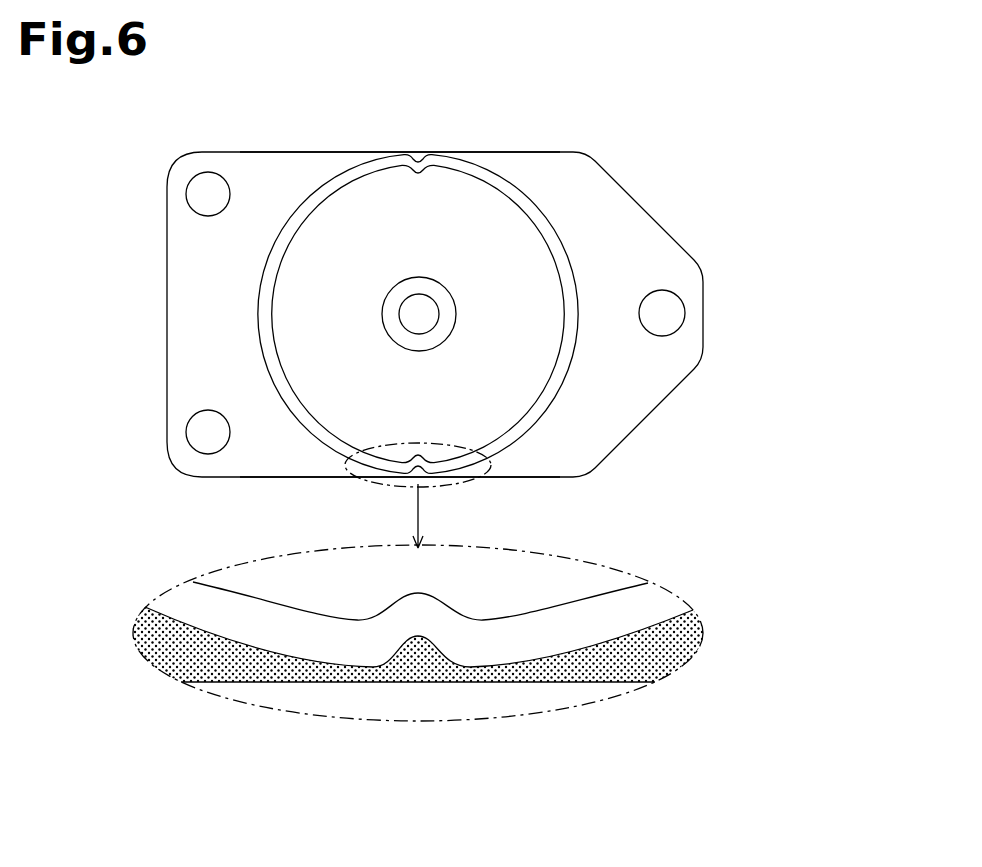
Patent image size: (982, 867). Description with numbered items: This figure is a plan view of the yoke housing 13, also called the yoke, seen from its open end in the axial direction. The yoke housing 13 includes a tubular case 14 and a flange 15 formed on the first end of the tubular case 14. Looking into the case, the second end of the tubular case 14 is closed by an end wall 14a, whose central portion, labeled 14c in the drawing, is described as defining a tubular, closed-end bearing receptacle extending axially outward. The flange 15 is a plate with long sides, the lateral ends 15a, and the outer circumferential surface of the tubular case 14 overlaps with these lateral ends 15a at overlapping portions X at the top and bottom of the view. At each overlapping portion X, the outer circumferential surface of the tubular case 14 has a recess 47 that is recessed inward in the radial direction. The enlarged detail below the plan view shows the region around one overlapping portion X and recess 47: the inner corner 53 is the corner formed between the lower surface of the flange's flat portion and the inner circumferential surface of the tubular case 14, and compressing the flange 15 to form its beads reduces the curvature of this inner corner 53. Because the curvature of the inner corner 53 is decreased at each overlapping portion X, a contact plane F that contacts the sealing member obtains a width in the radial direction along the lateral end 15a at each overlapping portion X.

The yoke housing 13 is at (719, 153).
The tubular case 14 is at (425, 293).
The end wall 14a is at (477, 202).
The center hub of cylindrical member 14c is at (446, 302).
The flange 15 is at (630, 213).
The lateral ends 15a is at (341, 153).
The recess 47 is at (418, 173).
The inner corner 53 is at (354, 634).
The contact plane F is at (378, 683).
The overlapping portion X is at (412, 153).